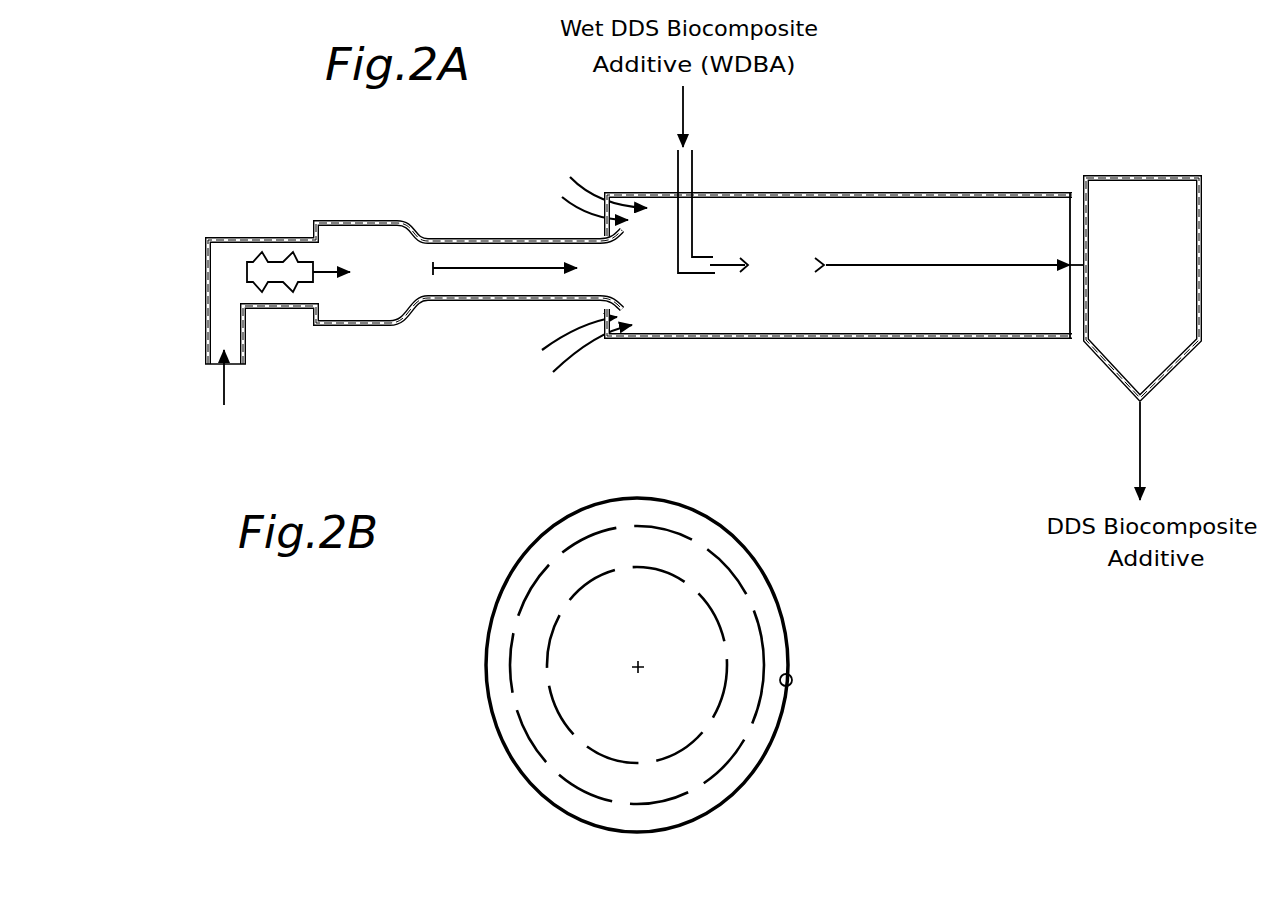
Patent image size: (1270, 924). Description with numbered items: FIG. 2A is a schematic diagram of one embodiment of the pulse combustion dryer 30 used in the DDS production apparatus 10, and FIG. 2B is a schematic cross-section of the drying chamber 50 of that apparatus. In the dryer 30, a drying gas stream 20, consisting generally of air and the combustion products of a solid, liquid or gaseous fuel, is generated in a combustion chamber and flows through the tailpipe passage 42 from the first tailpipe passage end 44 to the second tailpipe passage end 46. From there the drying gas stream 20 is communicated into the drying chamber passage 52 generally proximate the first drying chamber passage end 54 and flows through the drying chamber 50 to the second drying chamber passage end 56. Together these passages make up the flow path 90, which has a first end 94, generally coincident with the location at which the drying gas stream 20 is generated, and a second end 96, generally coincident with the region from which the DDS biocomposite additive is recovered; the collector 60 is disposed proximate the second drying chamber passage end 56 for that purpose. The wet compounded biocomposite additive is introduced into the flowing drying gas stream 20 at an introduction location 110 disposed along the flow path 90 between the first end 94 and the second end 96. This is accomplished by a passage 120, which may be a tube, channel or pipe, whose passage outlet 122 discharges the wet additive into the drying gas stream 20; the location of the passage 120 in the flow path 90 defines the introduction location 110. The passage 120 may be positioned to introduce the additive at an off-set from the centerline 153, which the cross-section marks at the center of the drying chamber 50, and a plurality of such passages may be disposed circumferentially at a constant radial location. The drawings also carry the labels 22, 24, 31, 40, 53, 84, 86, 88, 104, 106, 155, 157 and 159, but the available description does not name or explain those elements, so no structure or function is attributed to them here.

In FIG. 2A, the DDS production apparatus 10 is at (1055, 120).
In FIG. 2B, the DDS production apparatus 10 is at (925, 605).
In FIG. 2A, the drying gas stream 20 is at (477, 268).
In FIG. 2B, the drying gas stream 20 is at (590, 695).
In FIG. 2A, the inner air stream 22 is at (368, 293).
In FIG. 2B, the inner air stream 22 is at (590, 765).
In FIG. 2A, the outer air stream 24 is at (572, 178).
In FIG. 2B, the outer air stream 24 is at (633, 810).
In FIG. 2A, the pulse combustion dryer 30 is at (185, 226).
In FIG. 2B, the pulse combustion dryer 30 is at (478, 671).
In FIG. 2A, the nozzle body 31 is at (337, 326).
In FIG. 2A, the nozzle tube 40 is at (482, 300).
In FIG. 2A, the tailpipe passage 42 is at (505, 242).
In FIG. 2A, the first tailpipe passage end 44 is at (425, 240).
In FIG. 2A, the second tailpipe passage end 46 is at (620, 303).
In FIG. 2A, the drying chamber 50 is at (878, 338).
In FIG. 2B, the drying chamber 50 is at (789, 612).
In FIG. 2A, the drying chamber passage 52 is at (830, 313).
In FIG. 2B, the drying chamber passage 52 is at (693, 538).
In FIG. 2A, the conduit liner 53 is at (930, 336).
In FIG. 2B, the conduit liner 53 is at (793, 678).
In FIG. 2A, the first drying chamber passage end 54 is at (610, 343).
In FIG. 2A, the second drying chamber passage end 56 is at (1066, 345).
In FIG. 2A, the collector 60 is at (1163, 192).
In FIG. 2A, the gas flow 84 is at (333, 268).
In FIG. 2A, the gas inlet 86 is at (228, 388).
In FIG. 2A, the flow control valve 88 is at (258, 265).
In FIG. 2A, the flow path 90 is at (495, 268).
In FIG. 2A, the first end 94 is at (433, 274).
In FIG. 2A, the second end 96 is at (1030, 217).
In FIG. 2A, the feed tube outlet 104 is at (712, 287).
In FIG. 2A, the discharge 106 is at (1082, 268).
In FIG. 2A, the introduction location 110 is at (705, 280).
In FIG. 2A, the passage 120 is at (686, 175).
In FIG. 2A, the passage outlet 122 is at (725, 262).
In FIG. 2A, the centerline 153 is at (950, 263).
In FIG. 2B, the centerline 153 is at (646, 660).
In FIG. 2B, the inner annular region 155 is at (600, 590).
In FIG. 2B, the middle annular region 157 is at (553, 587).
In FIG. 2B, the outer annular region 159 is at (510, 598).